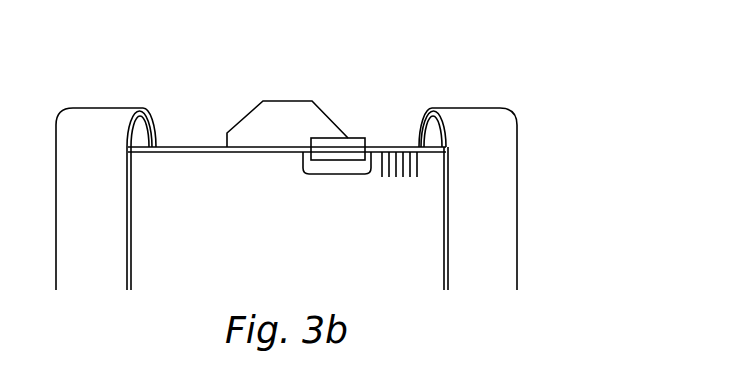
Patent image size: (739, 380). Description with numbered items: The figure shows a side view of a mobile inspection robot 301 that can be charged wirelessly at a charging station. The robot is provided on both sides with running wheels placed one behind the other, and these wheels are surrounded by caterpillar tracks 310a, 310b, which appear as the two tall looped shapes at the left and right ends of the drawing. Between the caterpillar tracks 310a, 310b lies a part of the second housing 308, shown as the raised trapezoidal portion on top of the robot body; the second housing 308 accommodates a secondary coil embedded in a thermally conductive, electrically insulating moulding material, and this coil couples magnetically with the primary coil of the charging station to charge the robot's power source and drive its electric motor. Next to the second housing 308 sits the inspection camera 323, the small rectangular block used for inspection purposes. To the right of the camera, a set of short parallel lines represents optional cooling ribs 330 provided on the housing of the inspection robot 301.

The inspection robot 301 is at (193, 205).
The second housing 308 is at (285, 115).
The caterpillar track 310a is at (98, 132).
The caterpillar track 310b is at (475, 133).
The inspection camera 323 is at (353, 150).
The cooling ribs 330 is at (423, 166).